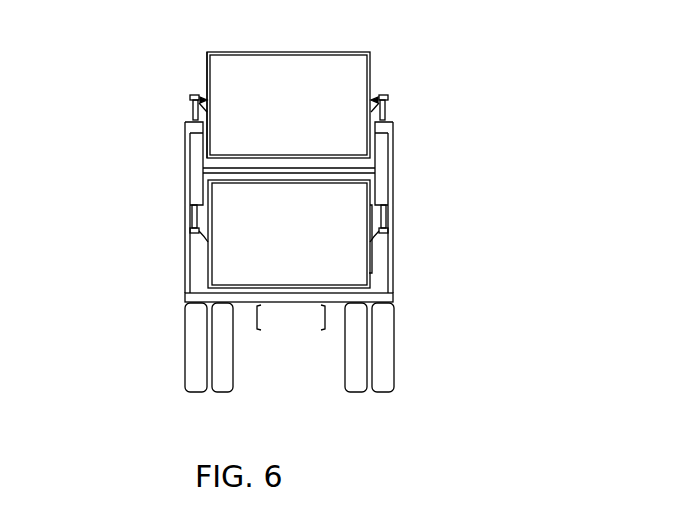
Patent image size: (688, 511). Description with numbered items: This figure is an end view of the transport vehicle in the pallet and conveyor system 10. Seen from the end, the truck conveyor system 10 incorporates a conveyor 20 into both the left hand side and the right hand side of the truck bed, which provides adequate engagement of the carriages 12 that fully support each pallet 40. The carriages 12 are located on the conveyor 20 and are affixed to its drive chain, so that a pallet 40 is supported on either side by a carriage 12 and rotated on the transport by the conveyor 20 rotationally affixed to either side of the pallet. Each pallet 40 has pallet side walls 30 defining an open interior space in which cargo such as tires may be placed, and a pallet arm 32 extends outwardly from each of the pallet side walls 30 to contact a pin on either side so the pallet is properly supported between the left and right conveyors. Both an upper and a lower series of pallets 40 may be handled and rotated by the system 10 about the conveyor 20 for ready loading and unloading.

The pallet and conveyor system 10 is at (412, 203).
The carriages 12 is at (192, 106).
The conveyor 20 is at (184, 174).
The pallet side walls 30 is at (371, 70).
The pallet arm 32 is at (298, 97).
The pallet 40 is at (198, 72).